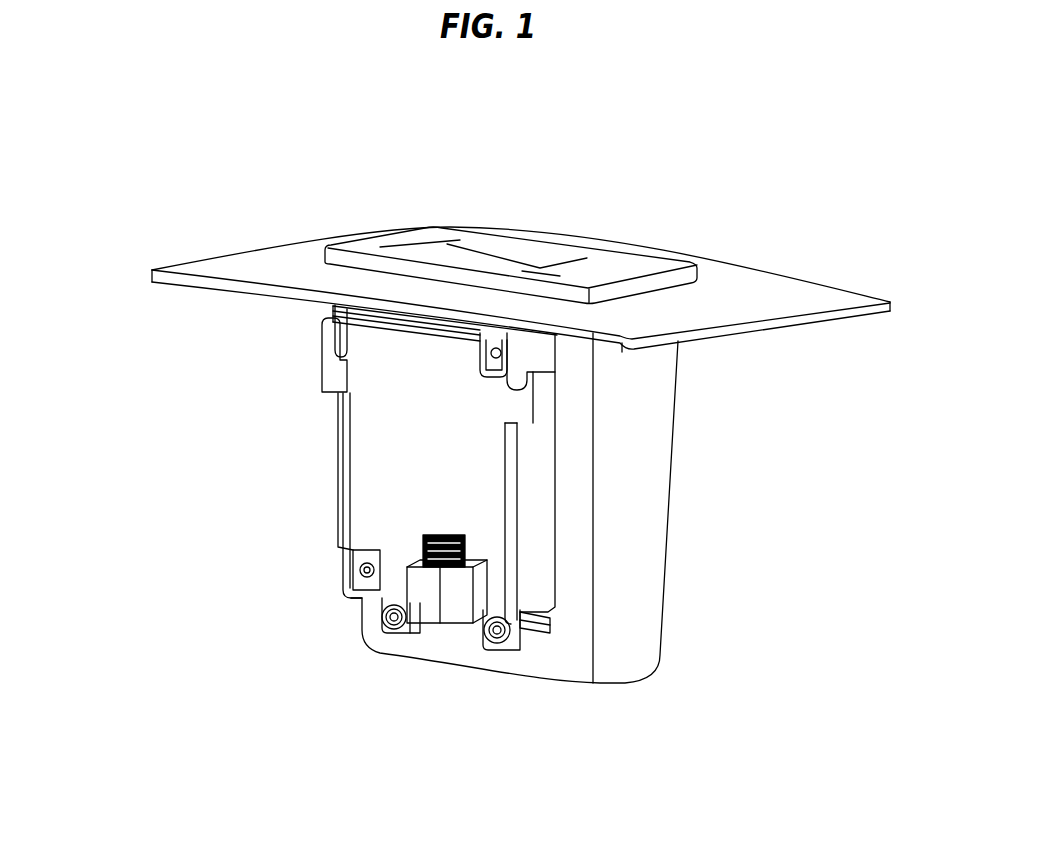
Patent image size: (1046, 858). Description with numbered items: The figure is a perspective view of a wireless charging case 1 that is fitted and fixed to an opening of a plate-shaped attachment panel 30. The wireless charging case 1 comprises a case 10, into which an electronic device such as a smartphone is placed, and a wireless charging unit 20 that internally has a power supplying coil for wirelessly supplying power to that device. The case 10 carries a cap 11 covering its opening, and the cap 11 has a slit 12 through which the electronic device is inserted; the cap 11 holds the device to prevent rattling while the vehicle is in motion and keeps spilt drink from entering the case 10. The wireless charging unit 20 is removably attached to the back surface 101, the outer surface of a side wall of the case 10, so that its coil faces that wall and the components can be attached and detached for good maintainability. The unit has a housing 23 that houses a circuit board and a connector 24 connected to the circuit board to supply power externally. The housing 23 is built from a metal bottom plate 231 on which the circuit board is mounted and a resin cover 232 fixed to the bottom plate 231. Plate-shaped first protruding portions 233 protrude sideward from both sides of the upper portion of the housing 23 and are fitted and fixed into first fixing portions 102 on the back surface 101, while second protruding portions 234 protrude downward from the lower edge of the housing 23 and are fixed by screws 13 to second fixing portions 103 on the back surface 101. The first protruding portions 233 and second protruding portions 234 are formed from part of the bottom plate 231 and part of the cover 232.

The wireless charging case 1 is at (704, 161).
The case 10 is at (662, 507).
The back surface 101 is at (576, 528).
The first fixing portion 102 is at (540, 358).
The second fixing portion 103 is at (535, 637).
The cap 11 is at (528, 248).
The slit 12 is at (442, 240).
The screw 13 is at (388, 617).
The wireless charging unit 20 is at (337, 447).
The housing 23 is at (183, 502).
The bottom plate 231 is at (360, 520).
The cover 232 is at (358, 570).
The first protruding portion 233 is at (603, 463).
The second protruding portion 234 is at (489, 650).
The connector 24 is at (413, 596).
The attachment panel 30 is at (765, 285).